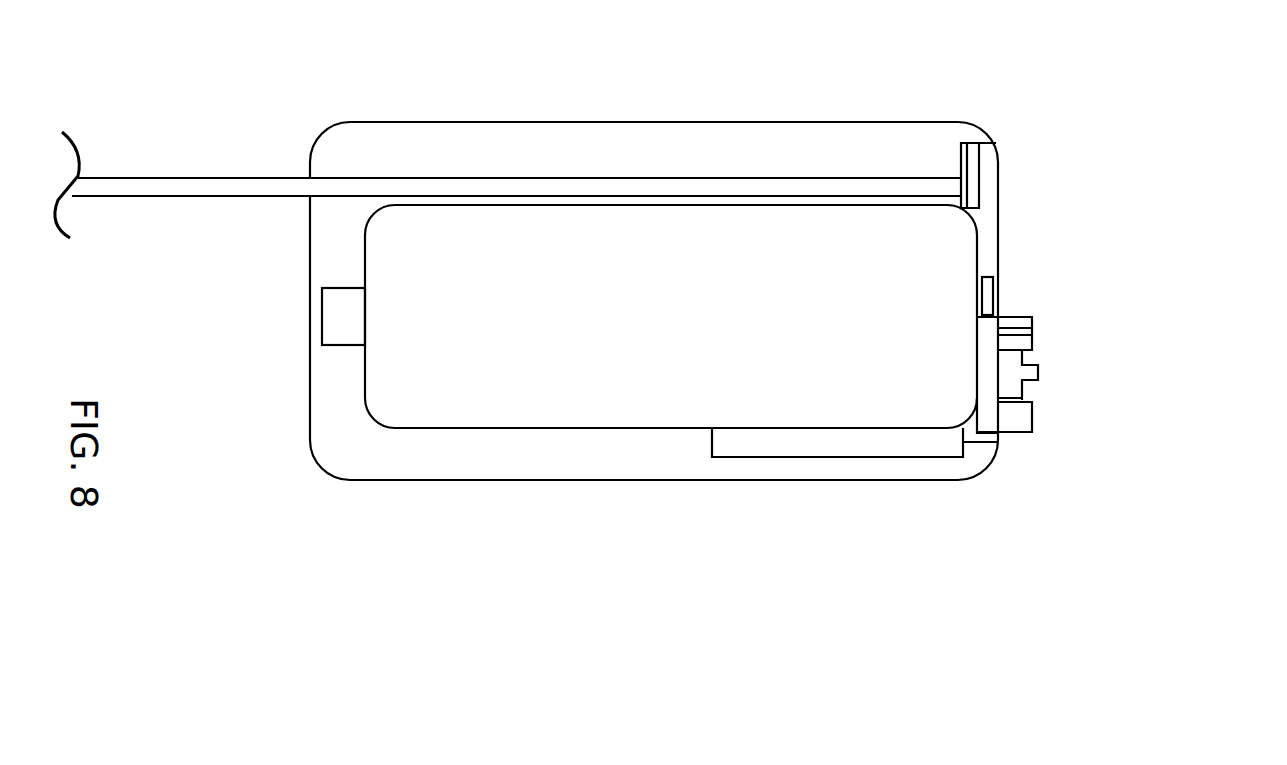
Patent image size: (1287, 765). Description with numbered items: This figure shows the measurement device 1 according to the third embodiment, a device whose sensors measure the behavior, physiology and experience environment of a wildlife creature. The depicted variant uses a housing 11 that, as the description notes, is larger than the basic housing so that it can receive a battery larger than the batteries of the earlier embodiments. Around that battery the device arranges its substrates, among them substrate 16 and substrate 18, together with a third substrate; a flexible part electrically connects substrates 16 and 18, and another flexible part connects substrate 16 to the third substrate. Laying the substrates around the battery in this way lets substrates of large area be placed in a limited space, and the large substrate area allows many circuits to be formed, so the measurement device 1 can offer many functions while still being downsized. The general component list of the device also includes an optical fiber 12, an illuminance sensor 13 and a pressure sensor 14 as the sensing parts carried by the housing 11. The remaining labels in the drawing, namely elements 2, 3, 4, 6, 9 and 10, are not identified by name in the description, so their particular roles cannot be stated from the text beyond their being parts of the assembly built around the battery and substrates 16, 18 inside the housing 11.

The measurement device 1 is at (654, 301).
The flexible conductor 2 is at (766, 180).
The connection portion 3 is at (960, 158).
The battery cell 4 is at (600, 407).
The battery pack 6 is at (1226, 609).
The opening 9 is at (988, 164).
The gap 10 is at (989, 457).
The housing 11 is at (848, 438).
The optical fiber 12 is at (998, 280).
The illuminance sensor 13 is at (1036, 330).
The pressure sensor 14 is at (1038, 372).
The substrate 16 is at (1005, 435).
The substrate 18 is at (728, 483).